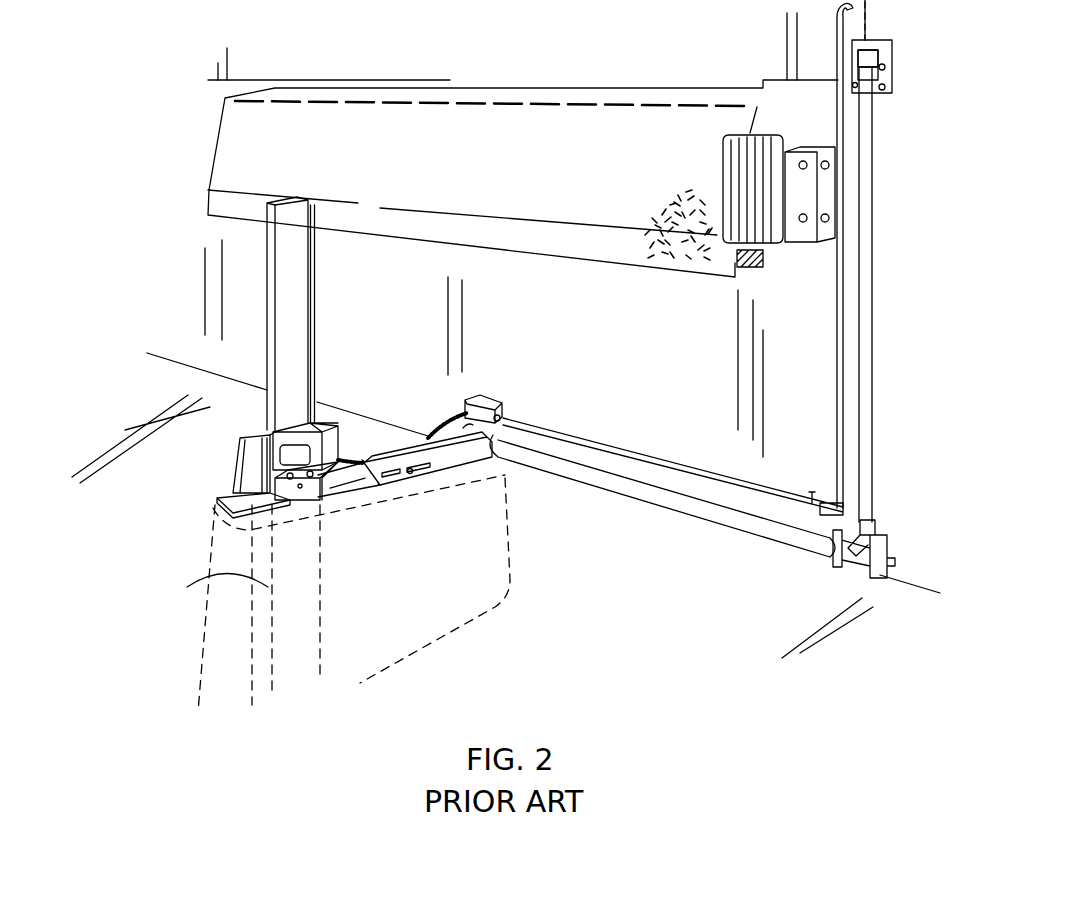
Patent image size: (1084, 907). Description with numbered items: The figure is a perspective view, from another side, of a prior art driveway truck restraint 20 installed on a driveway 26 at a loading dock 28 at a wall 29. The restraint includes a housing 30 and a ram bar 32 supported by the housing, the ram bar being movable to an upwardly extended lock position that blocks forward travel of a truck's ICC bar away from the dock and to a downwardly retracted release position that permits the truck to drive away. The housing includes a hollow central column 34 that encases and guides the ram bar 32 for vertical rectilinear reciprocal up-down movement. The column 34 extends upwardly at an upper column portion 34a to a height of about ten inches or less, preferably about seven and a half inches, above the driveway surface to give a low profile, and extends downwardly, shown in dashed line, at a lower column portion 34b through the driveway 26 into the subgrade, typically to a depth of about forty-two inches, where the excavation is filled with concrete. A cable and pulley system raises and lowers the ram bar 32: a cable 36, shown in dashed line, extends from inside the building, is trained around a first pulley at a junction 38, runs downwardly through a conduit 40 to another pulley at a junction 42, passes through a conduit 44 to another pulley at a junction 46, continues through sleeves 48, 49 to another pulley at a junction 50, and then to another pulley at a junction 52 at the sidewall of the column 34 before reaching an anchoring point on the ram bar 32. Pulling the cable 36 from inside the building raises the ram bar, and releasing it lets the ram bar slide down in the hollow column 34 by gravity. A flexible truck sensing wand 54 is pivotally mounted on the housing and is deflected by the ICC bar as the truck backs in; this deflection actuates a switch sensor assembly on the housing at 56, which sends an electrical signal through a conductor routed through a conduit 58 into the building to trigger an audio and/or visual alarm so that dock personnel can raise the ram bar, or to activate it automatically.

The driveway truck restraint 20 is at (222, 468).
The driveway 26 is at (407, 627).
The loading dock 28 is at (243, 168).
The wall 29 is at (188, 330).
The housing 30 is at (270, 435).
The ram bar 32 is at (277, 313).
The hollow central column 34 is at (258, 480).
The upper column portion 34a is at (258, 435).
The lower column portion 34b is at (206, 589).
The cable 36 is at (892, 60).
The junction 38 is at (858, 52).
The conduit 40 is at (873, 265).
The junction 42 is at (873, 537).
The conduit 44 is at (713, 502).
The junction 46 is at (492, 455).
The sleeve 48 is at (440, 473).
The sleeve 49 is at (360, 487).
The junction 50 is at (313, 500).
The junction 52 is at (300, 482).
The flexible truck sensing wand 54 is at (316, 295).
The switch sensor assembly location 56 is at (336, 426).
The conduit 58 is at (626, 451).